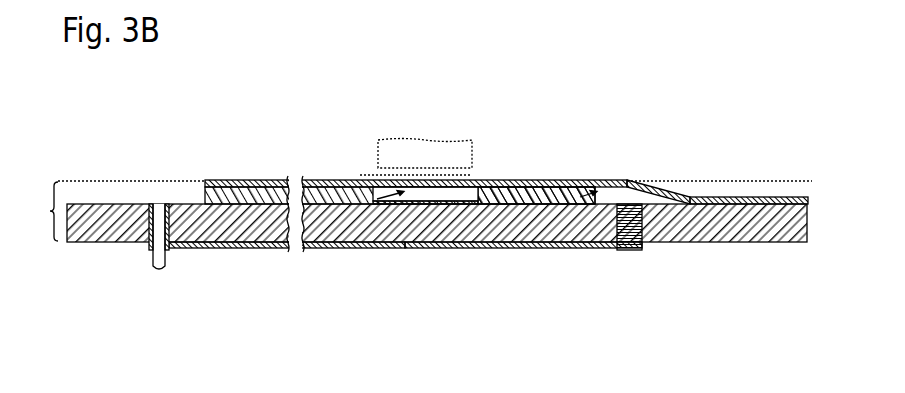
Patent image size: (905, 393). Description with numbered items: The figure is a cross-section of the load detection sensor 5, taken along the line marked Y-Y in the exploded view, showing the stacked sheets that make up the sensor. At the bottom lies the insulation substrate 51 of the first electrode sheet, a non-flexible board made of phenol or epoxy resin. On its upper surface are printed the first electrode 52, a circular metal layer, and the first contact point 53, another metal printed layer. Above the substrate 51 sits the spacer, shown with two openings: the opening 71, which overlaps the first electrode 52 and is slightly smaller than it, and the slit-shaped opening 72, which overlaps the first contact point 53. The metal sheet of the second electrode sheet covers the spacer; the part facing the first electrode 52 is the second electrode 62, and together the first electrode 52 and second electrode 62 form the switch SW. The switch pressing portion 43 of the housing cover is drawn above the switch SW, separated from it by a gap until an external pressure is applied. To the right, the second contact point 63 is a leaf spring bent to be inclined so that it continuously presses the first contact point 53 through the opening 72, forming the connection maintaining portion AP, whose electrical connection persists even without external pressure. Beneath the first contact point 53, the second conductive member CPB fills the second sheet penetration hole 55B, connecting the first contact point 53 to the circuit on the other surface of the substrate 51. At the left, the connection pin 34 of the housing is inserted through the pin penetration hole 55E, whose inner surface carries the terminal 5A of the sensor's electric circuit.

The load detection sensor 5 is at (116, 211).
The terminal 5A is at (148, 244).
The connection pin 34 is at (160, 272).
The pin penetration hole 55E is at (172, 258).
The switch pressing portion 43 is at (378, 148).
The switch SW is at (363, 177).
The second electrode 62 is at (470, 181).
The second contact point 63 is at (629, 181).
The connection maintaining portion AP is at (732, 186).
The first contact point 53 is at (812, 181).
The insulation substrate 51 is at (808, 222).
The first electrode 52 is at (436, 202).
The opening 71 is at (380, 202).
The opening 72 is at (567, 213).
The second conductive member CPB is at (615, 244).
The second sheet penetration hole 55B is at (641, 260).